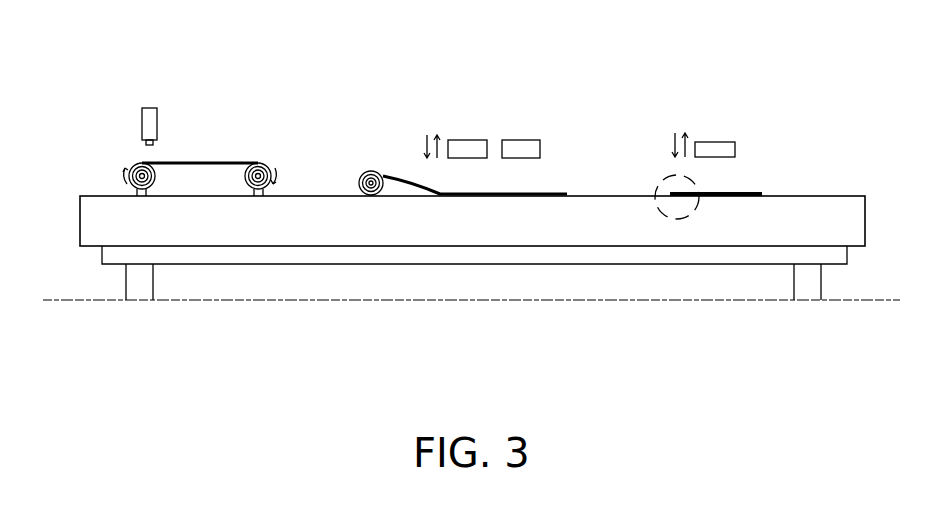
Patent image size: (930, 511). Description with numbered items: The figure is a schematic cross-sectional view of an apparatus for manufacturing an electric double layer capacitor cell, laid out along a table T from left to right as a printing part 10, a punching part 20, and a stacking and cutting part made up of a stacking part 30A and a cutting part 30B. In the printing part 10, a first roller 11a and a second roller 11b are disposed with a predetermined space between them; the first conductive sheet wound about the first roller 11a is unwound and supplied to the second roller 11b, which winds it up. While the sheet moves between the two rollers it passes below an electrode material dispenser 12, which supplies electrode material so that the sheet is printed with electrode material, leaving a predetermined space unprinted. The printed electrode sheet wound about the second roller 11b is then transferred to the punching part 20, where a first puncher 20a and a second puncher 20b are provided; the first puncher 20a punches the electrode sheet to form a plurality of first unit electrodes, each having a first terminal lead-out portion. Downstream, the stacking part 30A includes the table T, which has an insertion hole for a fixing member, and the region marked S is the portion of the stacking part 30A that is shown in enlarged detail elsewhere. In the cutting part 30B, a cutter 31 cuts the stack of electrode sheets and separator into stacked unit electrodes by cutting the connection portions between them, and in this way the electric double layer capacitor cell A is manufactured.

The printing part 10 is at (215, 46).
The first roller 11a is at (132, 162).
The second roller 11b is at (267, 162).
The electrode material dispenser 12 is at (147, 108).
The punching part 20 is at (507, 46).
The first puncher 20a is at (467, 147).
The second puncher 20b is at (527, 147).
The stacking part 30A is at (765, 47).
The cutting part 30B is at (714, 143).
The cutter 31 is at (715, 147).
The part of stacking part S is at (665, 175).
The electric double layer capacitor cell A is at (747, 193).
The table T is at (450, 235).